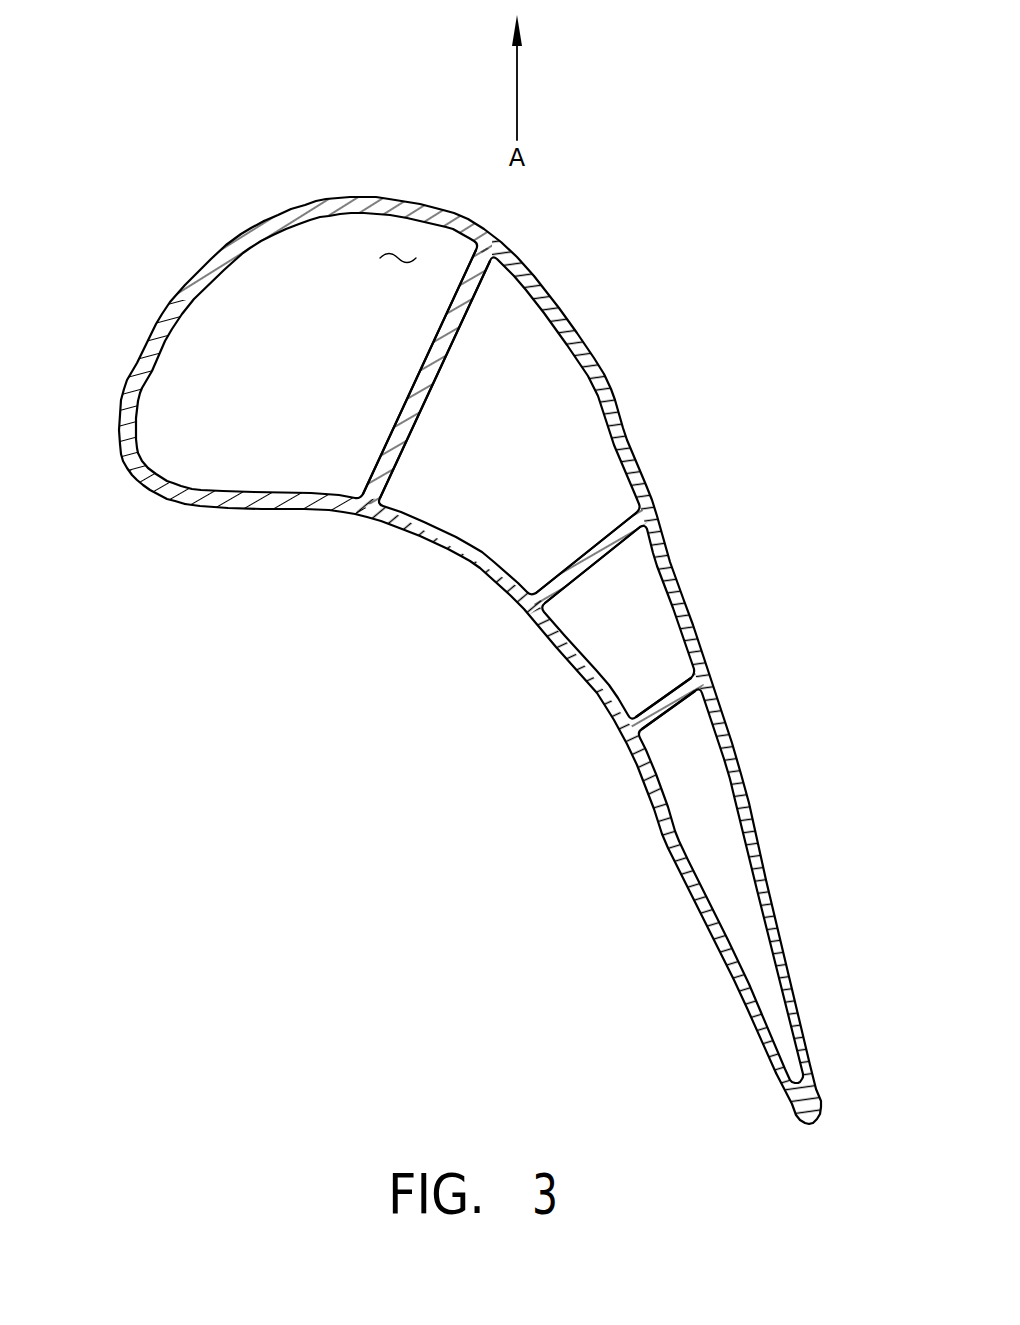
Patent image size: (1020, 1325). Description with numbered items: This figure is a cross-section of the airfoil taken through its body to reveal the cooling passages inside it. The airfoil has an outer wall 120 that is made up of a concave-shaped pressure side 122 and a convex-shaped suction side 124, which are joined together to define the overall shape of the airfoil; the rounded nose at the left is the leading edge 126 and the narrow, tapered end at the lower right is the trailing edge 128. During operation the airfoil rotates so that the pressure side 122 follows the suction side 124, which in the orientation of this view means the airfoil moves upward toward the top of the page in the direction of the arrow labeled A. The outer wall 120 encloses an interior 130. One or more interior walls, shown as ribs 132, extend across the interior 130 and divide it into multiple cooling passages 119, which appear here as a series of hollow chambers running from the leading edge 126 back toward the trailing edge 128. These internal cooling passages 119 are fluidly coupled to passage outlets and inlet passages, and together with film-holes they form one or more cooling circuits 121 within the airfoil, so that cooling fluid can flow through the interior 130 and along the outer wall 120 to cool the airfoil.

The cooling passages 119 is at (287, 367).
The outer wall 120 is at (435, 679).
The cooling circuit 121 is at (419, 510).
The pressure side 122 is at (523, 617).
The suction side 124 is at (613, 388).
The leading edge 126 is at (140, 487).
The trailing edge 128 is at (805, 1125).
The interior 130 is at (394, 256).
The ribs 132 is at (443, 380).